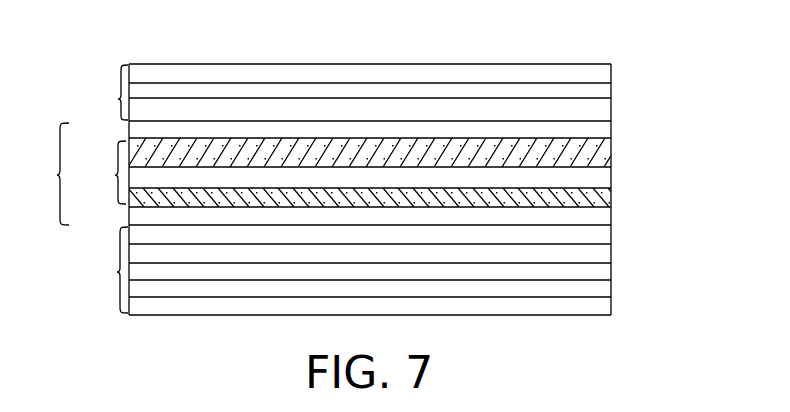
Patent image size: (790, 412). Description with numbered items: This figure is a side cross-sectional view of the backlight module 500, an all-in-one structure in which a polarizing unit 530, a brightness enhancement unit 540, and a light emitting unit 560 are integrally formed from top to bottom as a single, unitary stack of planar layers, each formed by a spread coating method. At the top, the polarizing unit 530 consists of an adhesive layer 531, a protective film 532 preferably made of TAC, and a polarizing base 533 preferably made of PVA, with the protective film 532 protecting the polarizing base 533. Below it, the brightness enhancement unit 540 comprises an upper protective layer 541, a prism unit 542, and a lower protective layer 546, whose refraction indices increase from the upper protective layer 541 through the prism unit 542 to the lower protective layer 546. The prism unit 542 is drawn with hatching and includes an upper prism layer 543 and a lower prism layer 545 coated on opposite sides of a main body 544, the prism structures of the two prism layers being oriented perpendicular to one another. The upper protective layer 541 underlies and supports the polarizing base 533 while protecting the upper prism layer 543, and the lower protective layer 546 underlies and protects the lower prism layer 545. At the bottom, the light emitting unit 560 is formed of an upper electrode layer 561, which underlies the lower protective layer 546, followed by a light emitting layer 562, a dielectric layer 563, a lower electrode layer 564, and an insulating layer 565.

The backlight module 500 is at (334, 39).
The polarizing unit 530 is at (340, 92).
The adhesive layer 531 is at (602, 74).
The protective film 532 is at (602, 91).
The polarizing base 533 is at (602, 111).
The brightness enhancement unit 540 is at (310, 173).
The upper protective layer 541 is at (602, 131).
The prism unit 542 is at (339, 172).
The upper prism layer 543 is at (600, 152).
The main body 544 is at (602, 178).
The lower prism layer 545 is at (600, 198).
The lower protective layer 546 is at (596, 216).
The light emitting unit 560 is at (340, 270).
The upper electrode layer 561 is at (596, 236).
The light emitting layer 562 is at (600, 255).
The dielectric layer 563 is at (598, 272).
The lower electrode layer 564 is at (597, 289).
The insulating layer 565 is at (598, 305).